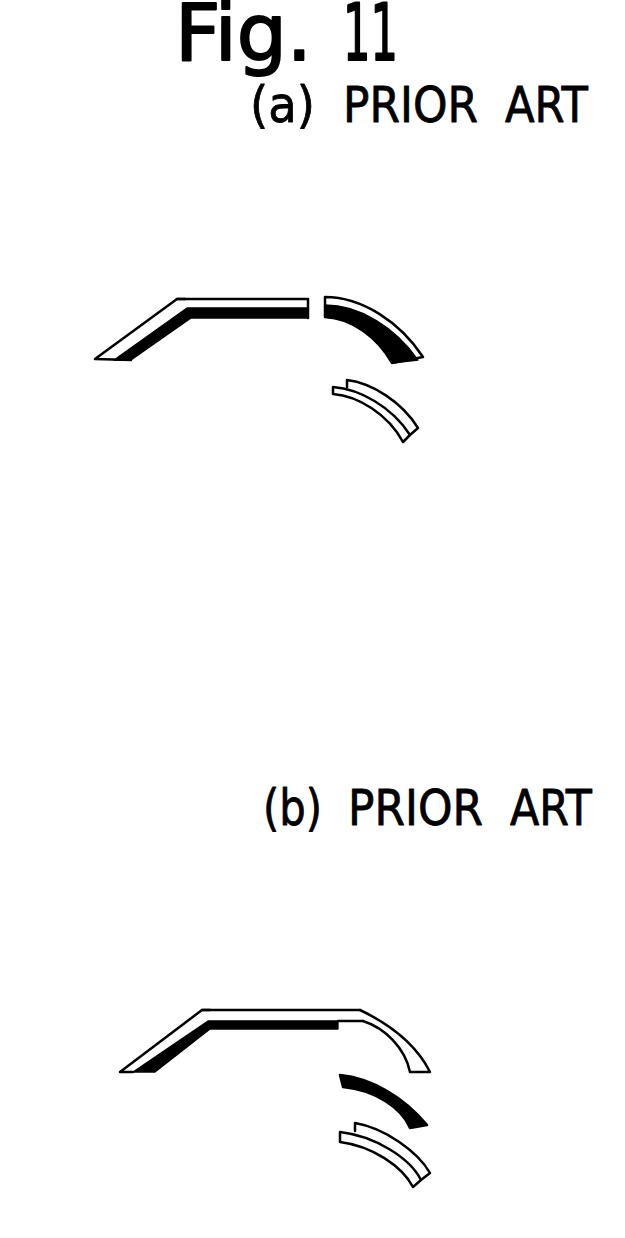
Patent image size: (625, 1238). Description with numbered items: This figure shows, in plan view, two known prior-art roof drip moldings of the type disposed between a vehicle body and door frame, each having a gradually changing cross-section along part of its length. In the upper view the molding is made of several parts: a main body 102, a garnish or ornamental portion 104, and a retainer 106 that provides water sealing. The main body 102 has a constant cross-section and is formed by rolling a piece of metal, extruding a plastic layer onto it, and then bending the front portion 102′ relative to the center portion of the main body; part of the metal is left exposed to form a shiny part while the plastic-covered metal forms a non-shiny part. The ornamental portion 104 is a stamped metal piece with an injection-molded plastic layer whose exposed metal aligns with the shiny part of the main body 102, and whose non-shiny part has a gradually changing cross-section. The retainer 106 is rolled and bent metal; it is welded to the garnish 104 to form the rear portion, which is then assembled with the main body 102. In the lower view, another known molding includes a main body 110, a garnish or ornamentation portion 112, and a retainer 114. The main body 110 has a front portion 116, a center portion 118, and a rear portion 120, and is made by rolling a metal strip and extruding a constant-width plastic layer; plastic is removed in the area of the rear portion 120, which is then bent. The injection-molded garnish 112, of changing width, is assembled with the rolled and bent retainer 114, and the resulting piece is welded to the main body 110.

The main body 102 is at (133, 326).
The front portion 102′ is at (148, 345).
The garnish or ornamental portion 104 is at (380, 310).
The retainer 106 is at (383, 412).
The main body 110 is at (263, 1033).
The garnish or ornamentation portion 112 is at (417, 1112).
The retainer 114 is at (427, 1171).
The front portion 116 is at (166, 1036).
The center portion 118 is at (263, 1010).
The rear portion 120 is at (403, 1033).